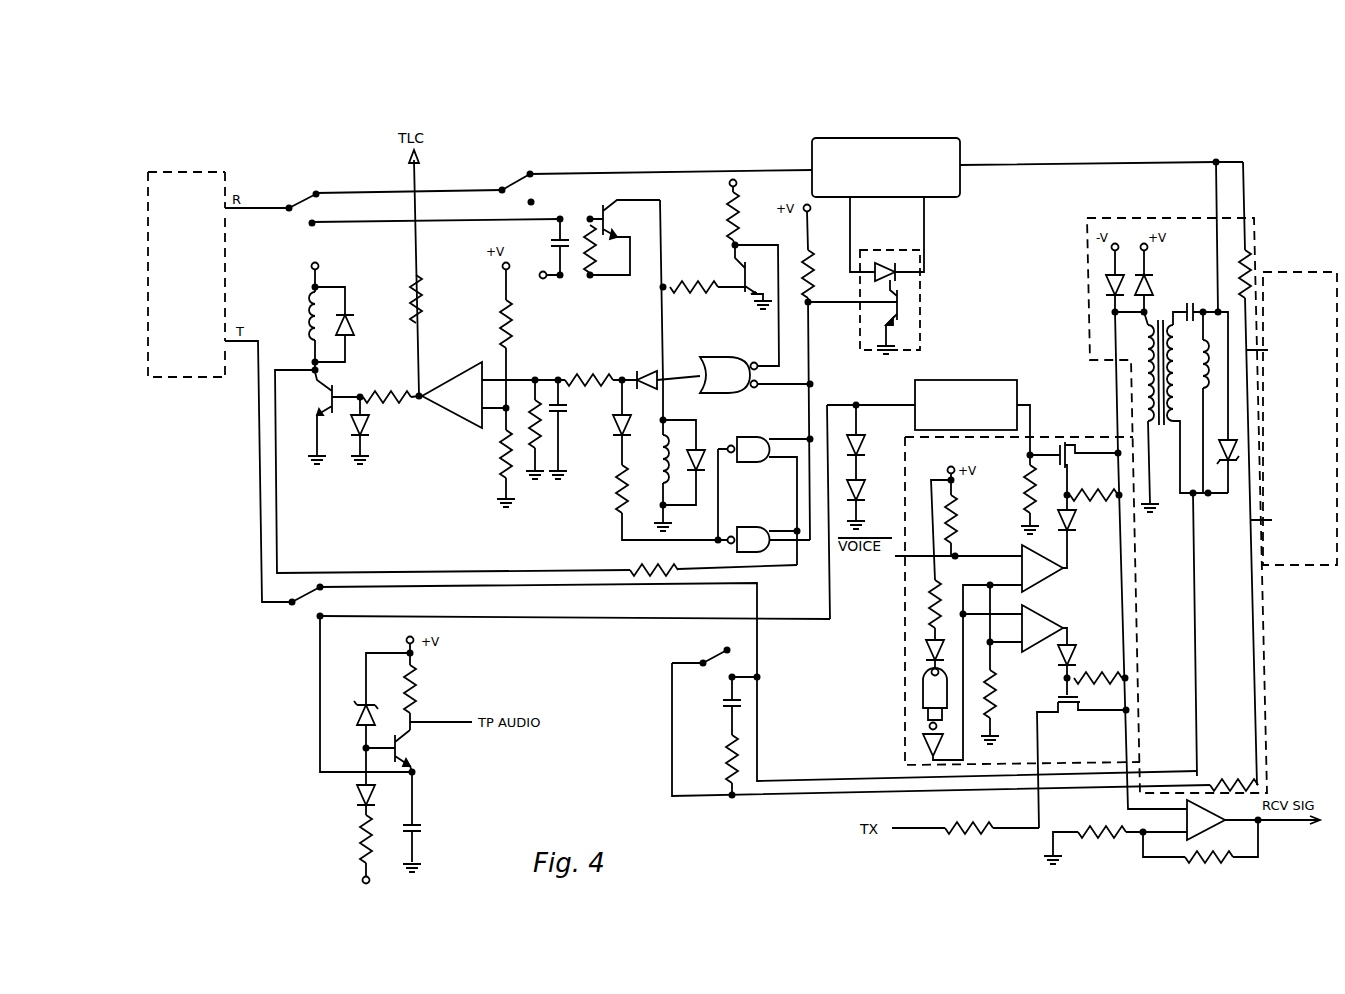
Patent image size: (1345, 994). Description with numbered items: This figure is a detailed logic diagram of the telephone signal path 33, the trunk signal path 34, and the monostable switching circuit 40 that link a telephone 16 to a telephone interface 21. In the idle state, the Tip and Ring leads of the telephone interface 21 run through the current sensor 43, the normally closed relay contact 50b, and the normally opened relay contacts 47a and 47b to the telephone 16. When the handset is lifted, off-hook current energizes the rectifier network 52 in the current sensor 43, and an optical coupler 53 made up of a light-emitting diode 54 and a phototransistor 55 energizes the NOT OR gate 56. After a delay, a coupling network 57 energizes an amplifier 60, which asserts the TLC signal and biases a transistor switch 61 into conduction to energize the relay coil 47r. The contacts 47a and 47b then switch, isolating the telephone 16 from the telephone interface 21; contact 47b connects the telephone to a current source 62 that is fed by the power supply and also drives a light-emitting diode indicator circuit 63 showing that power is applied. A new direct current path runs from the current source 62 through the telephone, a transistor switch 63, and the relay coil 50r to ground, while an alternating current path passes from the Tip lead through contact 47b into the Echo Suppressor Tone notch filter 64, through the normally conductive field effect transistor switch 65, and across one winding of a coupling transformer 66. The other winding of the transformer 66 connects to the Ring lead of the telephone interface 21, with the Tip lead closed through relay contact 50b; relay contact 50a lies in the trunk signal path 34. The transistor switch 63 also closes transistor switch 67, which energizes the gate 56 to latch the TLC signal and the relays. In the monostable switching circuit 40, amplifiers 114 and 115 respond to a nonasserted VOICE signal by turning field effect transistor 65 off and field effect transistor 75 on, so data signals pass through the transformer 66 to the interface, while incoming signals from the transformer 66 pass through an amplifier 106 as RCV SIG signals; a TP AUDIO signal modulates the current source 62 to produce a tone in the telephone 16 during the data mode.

The telephone 16 is at (186, 274).
The relay contact 47a is at (305, 192).
The relay coil 47r is at (305, 320).
The transistor switch 61 is at (322, 391).
The amplifier 60 is at (452, 395).
The coupling network 57 is at (660, 368).
The transistor switch 63 is at (613, 267).
The relay contact 50a is at (660, 140).
The telephone signal path 33 is at (644, 162).
The rectifier network 52 is at (908, 138).
The current sensor 43 is at (941, 238).
The light-emitting diode 54 is at (892, 260).
The optical coupler 53 is at (925, 310).
The phototransistor 55 is at (905, 327).
The transistor switch 67 is at (738, 270).
The NOT OR gate 56 is at (729, 375).
The relay coil 50r is at (668, 450).
The Echo Suppressor Tone notch filter 64 is at (975, 380).
The field effect transistor switch 65 is at (1060, 448).
The coupling transformer 66 is at (1166, 438).
The amplifier 114 is at (1047, 578).
The amplifier 115 is at (1055, 620).
The field effect transistor 75 is at (1072, 712).
The amplifier 106 is at (1212, 826).
The relay contact 47b is at (290, 608).
The current source 62 is at (424, 752).
The monostable switching circuit 40 is at (905, 742).
The relay contact 50b is at (706, 658).
The telephone interface 21 is at (1300, 418).
The trunk signal path 34 is at (1170, 486).